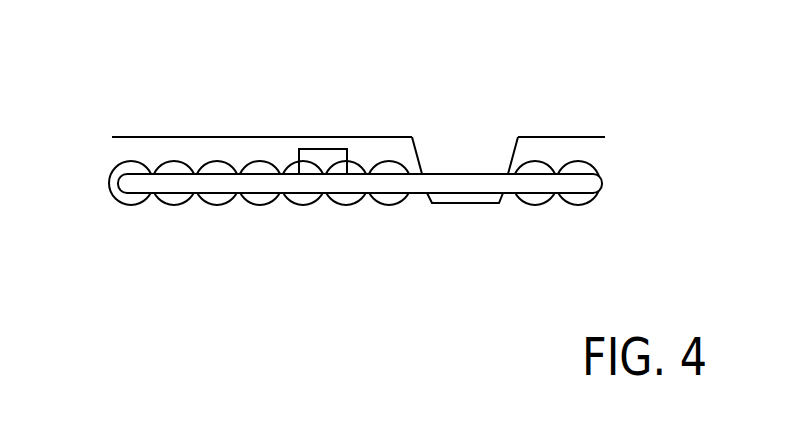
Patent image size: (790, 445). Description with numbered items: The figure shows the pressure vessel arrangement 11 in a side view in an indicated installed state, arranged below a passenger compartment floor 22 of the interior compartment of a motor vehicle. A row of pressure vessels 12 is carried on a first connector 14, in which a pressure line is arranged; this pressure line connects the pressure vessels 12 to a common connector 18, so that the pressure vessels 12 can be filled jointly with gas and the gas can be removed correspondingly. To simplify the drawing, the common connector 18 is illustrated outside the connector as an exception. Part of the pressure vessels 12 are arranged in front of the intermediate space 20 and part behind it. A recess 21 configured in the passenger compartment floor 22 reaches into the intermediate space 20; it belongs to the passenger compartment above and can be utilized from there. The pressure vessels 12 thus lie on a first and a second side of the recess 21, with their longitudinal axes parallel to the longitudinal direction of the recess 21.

The pressure vessel arrangement 11 is at (533, 92).
The pressure vessels 12 is at (583, 205).
The first connector 14 is at (110, 183).
The common connector 18 is at (321, 149).
The intermediate space 20 is at (470, 205).
The recess 21 is at (424, 153).
The passenger compartment floor 22 is at (182, 137).